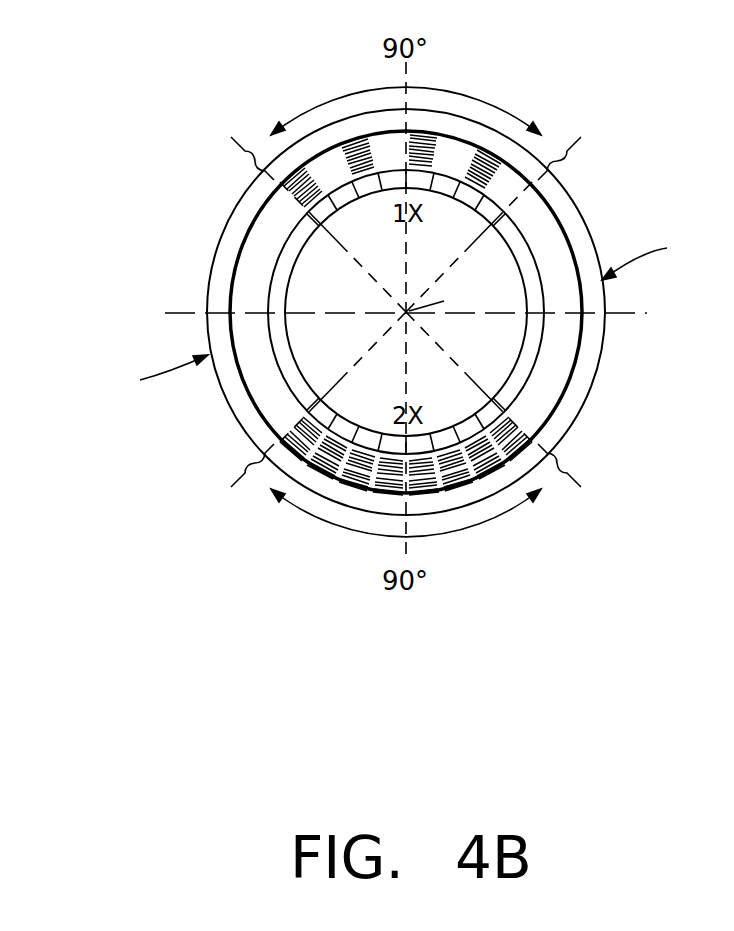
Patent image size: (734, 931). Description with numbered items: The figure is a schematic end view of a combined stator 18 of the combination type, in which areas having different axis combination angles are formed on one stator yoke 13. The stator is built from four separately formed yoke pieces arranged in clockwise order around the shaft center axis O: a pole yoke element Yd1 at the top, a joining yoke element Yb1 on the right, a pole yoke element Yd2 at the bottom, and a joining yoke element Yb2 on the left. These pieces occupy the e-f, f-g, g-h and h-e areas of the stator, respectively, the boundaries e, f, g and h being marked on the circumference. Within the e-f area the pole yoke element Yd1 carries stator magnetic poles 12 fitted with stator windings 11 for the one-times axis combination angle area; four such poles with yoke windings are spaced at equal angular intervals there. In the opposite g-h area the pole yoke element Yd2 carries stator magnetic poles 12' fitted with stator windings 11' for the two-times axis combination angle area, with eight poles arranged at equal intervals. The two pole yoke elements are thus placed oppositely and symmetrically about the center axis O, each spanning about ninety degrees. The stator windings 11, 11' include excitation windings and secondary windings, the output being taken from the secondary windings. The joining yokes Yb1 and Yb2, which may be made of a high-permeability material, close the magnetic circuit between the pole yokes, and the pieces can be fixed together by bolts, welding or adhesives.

The stator windings 11 is at (325, 103).
The stator magnetic poles 12 is at (447, 107).
The stator windings 11' is at (528, 489).
The stator magnetic poles 12' is at (484, 521).
The stator yoke 13 is at (433, 518).
The combined stator 18 is at (180, 231).
The pole yoke element Yd1 is at (522, 121).
The pole yoke element Yd2 is at (288, 502).
The joining yoke element Yb1 is at (664, 257).
The joining yoke element Yb2 is at (146, 376).
The boundary point e is at (237, 158).
The boundary point f is at (571, 158).
The boundary point g is at (575, 466).
The boundary point h is at (237, 470).
The shaft center axis O is at (438, 298).